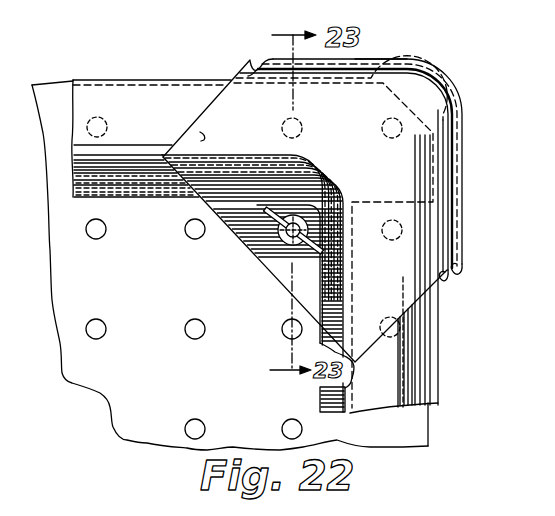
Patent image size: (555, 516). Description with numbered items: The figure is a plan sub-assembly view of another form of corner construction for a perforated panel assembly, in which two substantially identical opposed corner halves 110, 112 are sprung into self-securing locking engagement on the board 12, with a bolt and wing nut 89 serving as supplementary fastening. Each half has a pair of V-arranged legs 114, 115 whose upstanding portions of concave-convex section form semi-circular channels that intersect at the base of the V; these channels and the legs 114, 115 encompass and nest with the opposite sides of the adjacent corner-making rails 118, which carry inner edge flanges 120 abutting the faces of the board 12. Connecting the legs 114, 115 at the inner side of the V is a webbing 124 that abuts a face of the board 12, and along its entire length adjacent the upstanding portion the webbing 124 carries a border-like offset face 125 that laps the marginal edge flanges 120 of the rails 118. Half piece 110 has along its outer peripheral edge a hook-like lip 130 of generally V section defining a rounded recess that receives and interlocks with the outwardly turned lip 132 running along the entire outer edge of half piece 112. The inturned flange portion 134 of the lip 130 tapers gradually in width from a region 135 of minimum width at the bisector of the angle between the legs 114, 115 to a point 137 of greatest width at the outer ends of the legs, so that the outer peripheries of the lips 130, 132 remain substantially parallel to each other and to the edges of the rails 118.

The board 12 is at (67, 302).
The wing nut 89 is at (288, 243).
The corner half 110 is at (428, 66).
The corner half 112 is at (237, 108).
The leg 114 is at (405, 282).
The leg 115 is at (200, 132).
The rail 118 is at (113, 95).
The inner edge flange 120 is at (147, 193).
The webbing 124 is at (250, 232).
The offset face 125 is at (205, 184).
The lip 130 is at (355, 60).
The outwardly turned lip 132 is at (260, 64).
The inturned flange portion 134 is at (453, 177).
The region of minimum width 135 is at (440, 83).
The point of greatest width 137 is at (273, 57).